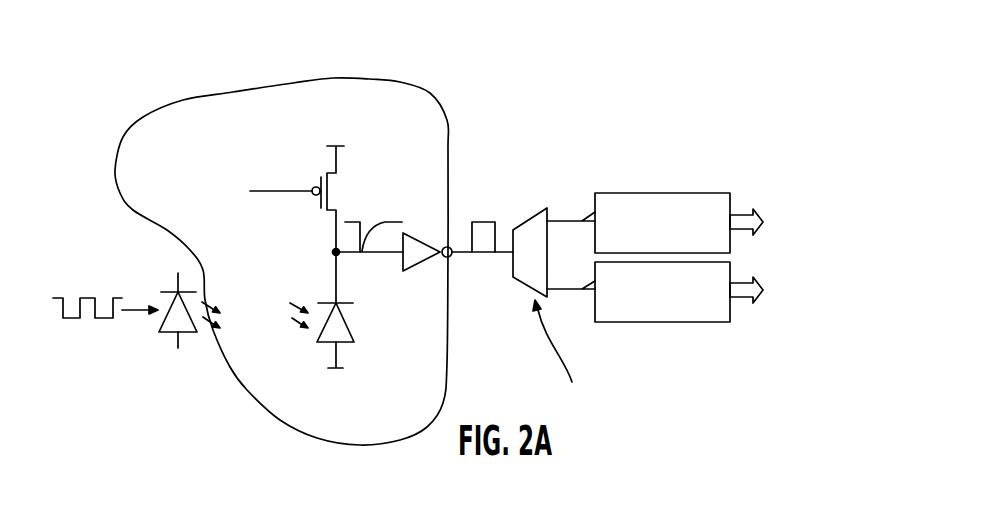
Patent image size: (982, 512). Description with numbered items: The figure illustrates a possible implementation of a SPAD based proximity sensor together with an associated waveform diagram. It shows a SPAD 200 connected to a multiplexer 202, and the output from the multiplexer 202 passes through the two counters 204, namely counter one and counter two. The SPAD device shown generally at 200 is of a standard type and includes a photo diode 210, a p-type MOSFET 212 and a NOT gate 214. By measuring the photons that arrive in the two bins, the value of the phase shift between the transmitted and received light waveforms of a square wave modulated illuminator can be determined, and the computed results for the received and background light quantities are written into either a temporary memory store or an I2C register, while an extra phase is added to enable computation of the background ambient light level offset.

The SPAD 200 is at (466, 129).
The multiplexer 202 is at (548, 294).
The counters 204 is at (717, 193).
The photo diode 210 is at (325, 343).
The p-type MOSFET 212 is at (319, 180).
The NOT gate 214 is at (423, 258).